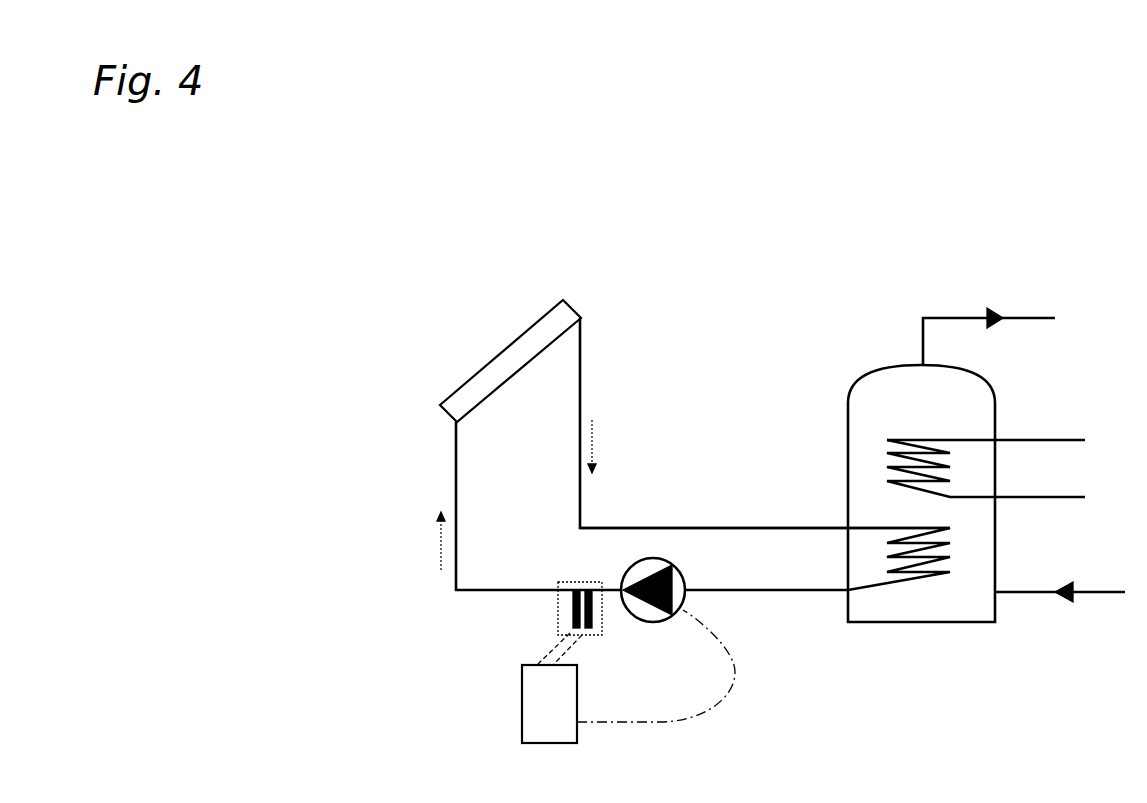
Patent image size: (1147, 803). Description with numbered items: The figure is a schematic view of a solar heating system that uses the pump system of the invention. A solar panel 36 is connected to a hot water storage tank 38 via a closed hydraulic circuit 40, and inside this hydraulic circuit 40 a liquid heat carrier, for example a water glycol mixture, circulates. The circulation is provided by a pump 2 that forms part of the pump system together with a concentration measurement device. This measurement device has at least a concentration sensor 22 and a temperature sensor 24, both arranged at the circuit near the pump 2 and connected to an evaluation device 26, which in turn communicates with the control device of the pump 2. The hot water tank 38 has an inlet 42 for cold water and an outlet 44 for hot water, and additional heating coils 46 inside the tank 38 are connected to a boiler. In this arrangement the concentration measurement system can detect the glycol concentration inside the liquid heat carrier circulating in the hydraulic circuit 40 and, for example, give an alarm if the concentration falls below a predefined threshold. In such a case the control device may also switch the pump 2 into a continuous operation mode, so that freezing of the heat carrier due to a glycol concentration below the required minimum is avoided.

The pump 2 is at (688, 566).
The concentration sensor 22 is at (575, 614).
The temperature sensor 24 is at (600, 614).
The evaluation device 26 is at (628, 676).
The solar panel 36 is at (497, 348).
The hot water storage tank 38 is at (925, 630).
The closed hydraulic circuit 40 is at (650, 520).
The inlet 42 is at (1100, 605).
The outlet 44 is at (1030, 310).
The heating coils 46 is at (923, 432).